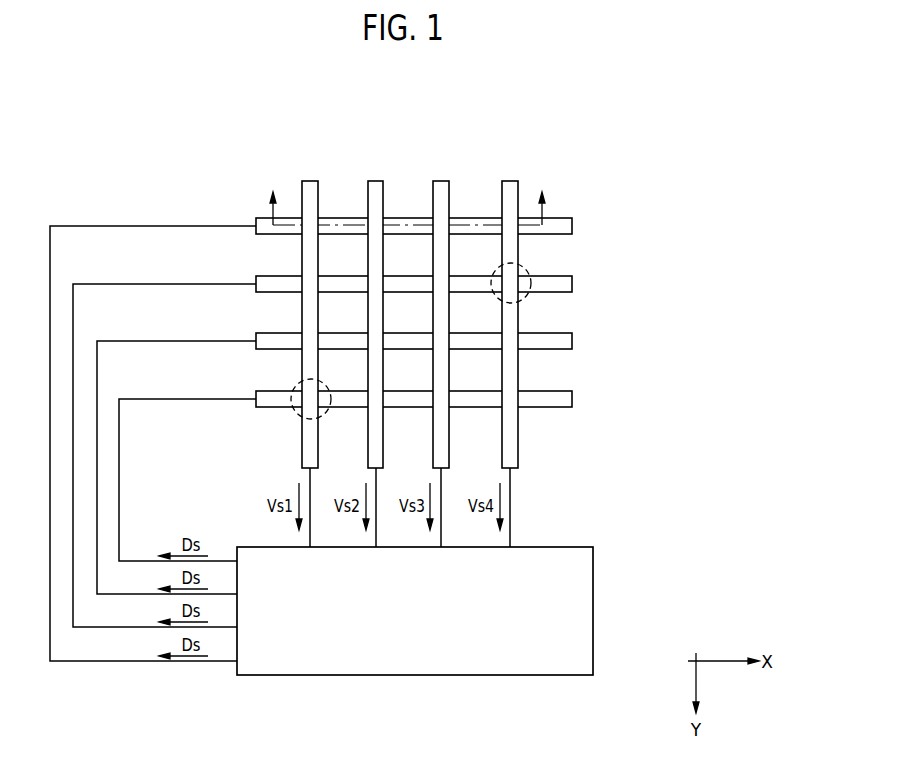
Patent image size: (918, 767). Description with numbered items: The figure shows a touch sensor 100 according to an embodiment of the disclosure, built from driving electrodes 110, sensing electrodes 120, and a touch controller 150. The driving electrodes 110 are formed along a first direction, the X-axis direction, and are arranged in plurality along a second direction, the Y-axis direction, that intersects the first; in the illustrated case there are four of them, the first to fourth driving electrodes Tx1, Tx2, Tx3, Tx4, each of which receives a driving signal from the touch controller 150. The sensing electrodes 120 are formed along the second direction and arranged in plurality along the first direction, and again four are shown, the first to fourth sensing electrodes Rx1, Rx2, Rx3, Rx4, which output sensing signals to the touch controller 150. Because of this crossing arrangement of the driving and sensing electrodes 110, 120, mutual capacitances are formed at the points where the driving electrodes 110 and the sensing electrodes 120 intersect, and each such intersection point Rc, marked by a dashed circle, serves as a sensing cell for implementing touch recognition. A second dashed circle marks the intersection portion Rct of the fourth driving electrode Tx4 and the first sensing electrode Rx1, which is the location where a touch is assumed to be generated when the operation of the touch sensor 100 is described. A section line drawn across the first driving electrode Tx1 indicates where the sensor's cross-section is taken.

The touch sensor 100 is at (578, 130).
The driving electrodes 110 is at (643, 217).
The sensing electrodes 120 is at (295, 122).
The touch controller 150 is at (593, 597).
The first driving electrode Tx1 is at (572, 226).
The second driving electrode Tx2 is at (572, 284).
The third driving electrode Tx3 is at (572, 341).
The fourth driving electrode Tx4 is at (572, 399).
The first sensing electrode Rx1 is at (310, 181).
The second sensing electrode Rx2 is at (376, 181).
The third sensing electrode Rx3 is at (441, 181).
The fourth sensing electrode Rx4 is at (510, 181).
The intersection point Rc is at (525, 269).
The intersection portion Rct is at (297, 413).